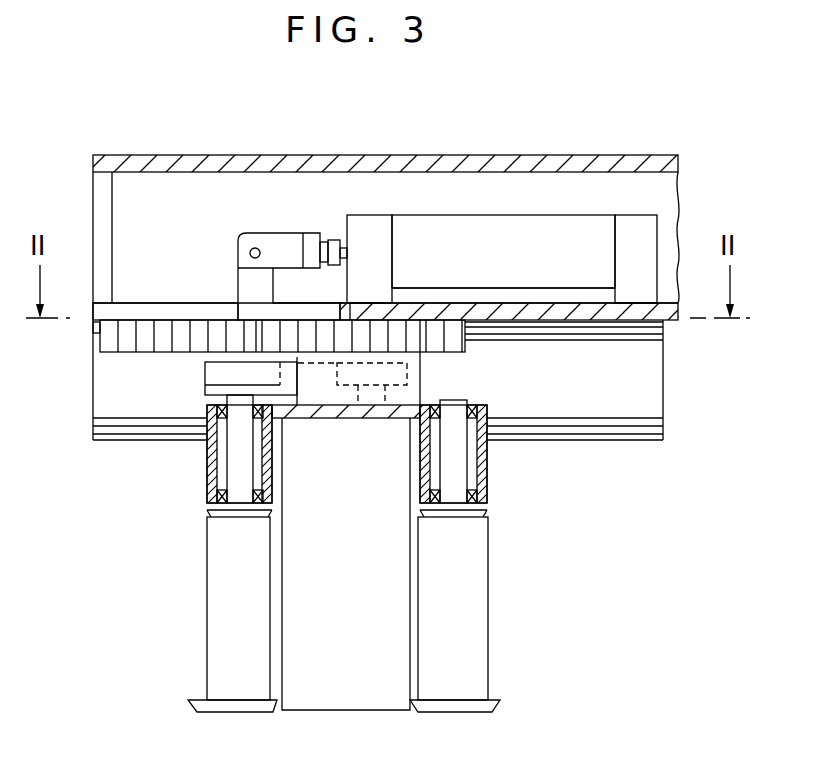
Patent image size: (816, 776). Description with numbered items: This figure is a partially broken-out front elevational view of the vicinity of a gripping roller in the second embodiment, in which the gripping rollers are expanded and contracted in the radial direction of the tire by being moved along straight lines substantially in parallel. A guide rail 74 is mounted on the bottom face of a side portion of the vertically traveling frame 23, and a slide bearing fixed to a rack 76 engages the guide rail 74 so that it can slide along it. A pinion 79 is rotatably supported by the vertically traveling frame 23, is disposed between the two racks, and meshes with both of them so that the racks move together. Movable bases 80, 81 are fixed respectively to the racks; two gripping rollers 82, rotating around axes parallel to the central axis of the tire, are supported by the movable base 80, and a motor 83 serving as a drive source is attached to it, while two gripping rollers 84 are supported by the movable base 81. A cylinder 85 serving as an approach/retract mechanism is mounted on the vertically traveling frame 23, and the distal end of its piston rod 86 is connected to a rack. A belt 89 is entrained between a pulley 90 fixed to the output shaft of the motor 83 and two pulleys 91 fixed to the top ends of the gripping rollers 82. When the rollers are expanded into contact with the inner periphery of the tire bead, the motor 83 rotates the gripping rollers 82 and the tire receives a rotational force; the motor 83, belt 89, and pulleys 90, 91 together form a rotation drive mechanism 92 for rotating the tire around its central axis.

The vertically traveling frame 23 is at (503, 155).
The guide rail 74 is at (663, 330).
The rack 76 is at (117, 343).
The pinion 79 is at (399, 330).
The movable base 80 is at (207, 462).
The movable base 81 is at (488, 465).
The gripping roller 82 is at (213, 610).
The motor 83 is at (357, 693).
The gripping roller 84 is at (487, 560).
The cylinder 85 is at (540, 227).
The piston rod 86 is at (338, 240).
The belt 89 is at (325, 378).
The pulley 90 is at (420, 371).
The pulley 91 is at (212, 377).
The rotation drive mechanism 92 is at (497, 372).